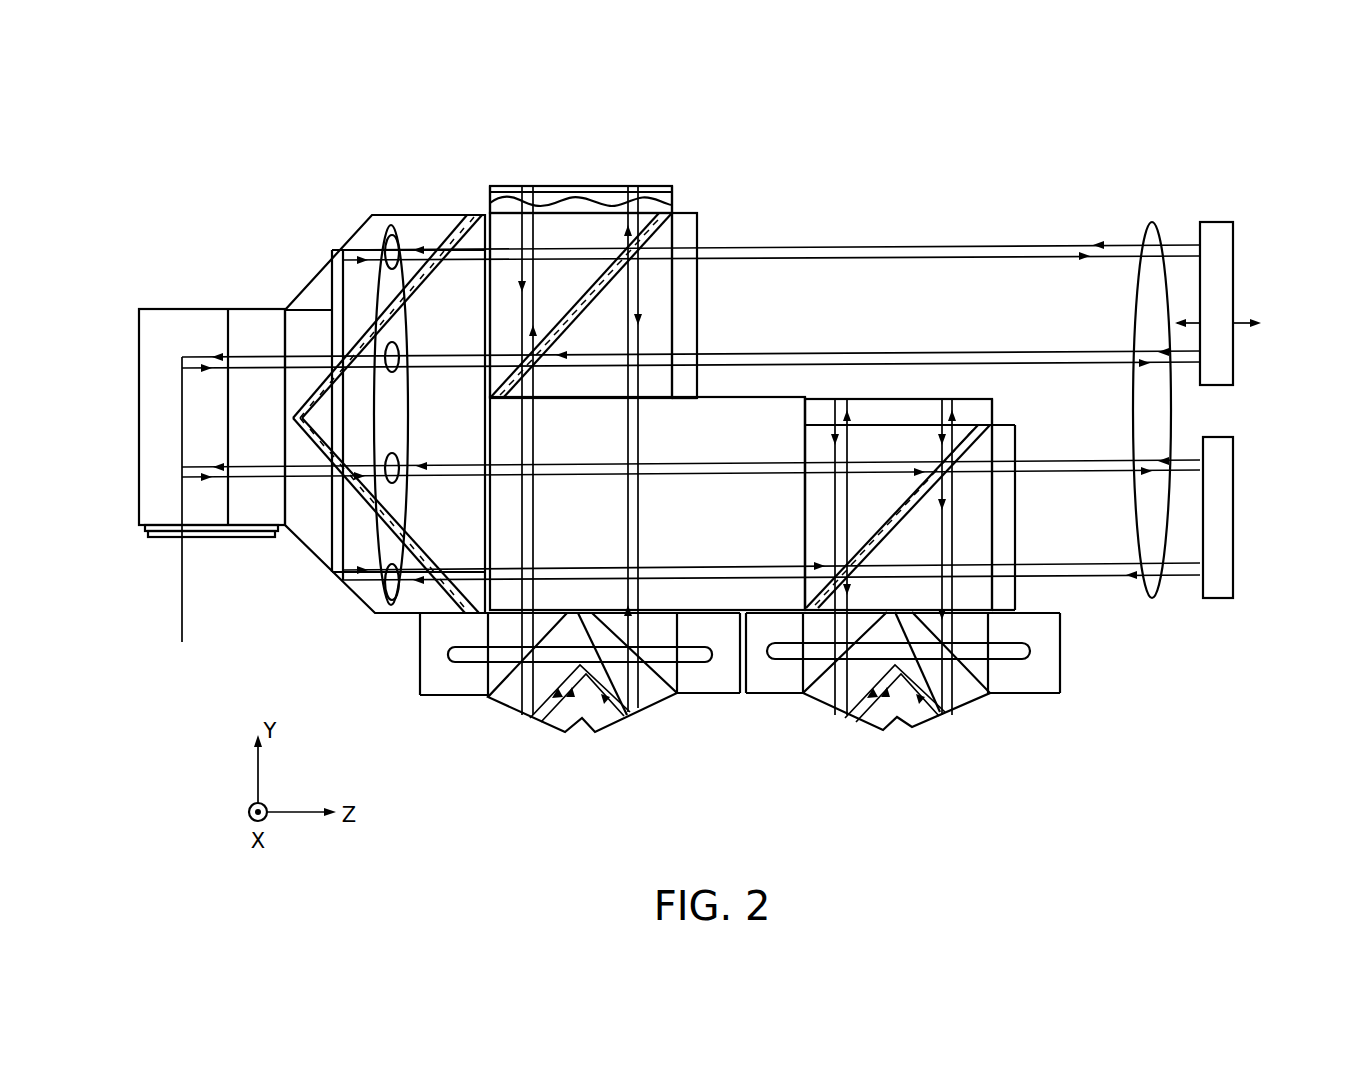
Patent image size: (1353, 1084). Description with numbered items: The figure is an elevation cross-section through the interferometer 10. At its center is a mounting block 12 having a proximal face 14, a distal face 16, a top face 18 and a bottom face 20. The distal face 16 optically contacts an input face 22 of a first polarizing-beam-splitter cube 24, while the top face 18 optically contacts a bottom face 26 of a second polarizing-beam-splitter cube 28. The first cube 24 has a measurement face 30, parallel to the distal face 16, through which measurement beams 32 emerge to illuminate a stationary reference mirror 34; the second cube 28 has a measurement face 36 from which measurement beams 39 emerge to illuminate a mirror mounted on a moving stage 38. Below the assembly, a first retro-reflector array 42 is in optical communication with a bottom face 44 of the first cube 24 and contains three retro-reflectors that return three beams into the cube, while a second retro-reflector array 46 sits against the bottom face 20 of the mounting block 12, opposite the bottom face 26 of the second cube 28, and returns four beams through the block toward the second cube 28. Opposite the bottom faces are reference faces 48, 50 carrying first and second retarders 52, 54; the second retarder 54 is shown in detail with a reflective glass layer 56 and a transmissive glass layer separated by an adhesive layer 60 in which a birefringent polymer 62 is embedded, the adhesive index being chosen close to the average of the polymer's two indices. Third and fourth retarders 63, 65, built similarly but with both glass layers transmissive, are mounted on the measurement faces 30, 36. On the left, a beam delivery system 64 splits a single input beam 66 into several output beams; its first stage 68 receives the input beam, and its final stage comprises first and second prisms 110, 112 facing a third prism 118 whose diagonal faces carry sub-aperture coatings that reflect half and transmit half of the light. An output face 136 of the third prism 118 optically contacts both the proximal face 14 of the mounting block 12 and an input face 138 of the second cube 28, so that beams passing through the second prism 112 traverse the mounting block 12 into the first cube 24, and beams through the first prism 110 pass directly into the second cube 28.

The interferometer 10 is at (776, 116).
The mounting block 12 is at (647, 503).
The proximal face 14 is at (500, 521).
The distal face 16 is at (808, 410).
The top face 18 is at (760, 396).
The bottom face 20 is at (578, 612).
The input face 22 is at (805, 530).
The first polarizing-beam-splitter cube 24 is at (898, 516).
The bottom face 26 is at (660, 397).
The second polarizing-beam-splitter cube 28 is at (581, 305).
The measurement face 30 is at (1006, 449).
The measurement beams 32 is at (1058, 475).
The stationary reference mirror 34 is at (1235, 572).
The measurement face 36 is at (699, 229).
The moving stage 38 is at (1235, 292).
The measurement beams 39 is at (914, 246).
The first retro-reflector array 42 is at (931, 740).
The bottom face 44 is at (975, 626).
The second retro-reflector array 46 is at (616, 740).
The reference face 48 is at (975, 421).
The reference face 50 is at (488, 208).
The first retarder 52 is at (900, 412).
The second retarder 54 is at (686, 193).
The reflective glass layer 56 is at (617, 187).
The adhesive layer 60 is at (557, 197).
The birefringent polymer 62 is at (506, 208).
The third retarder 63 is at (1015, 452).
The beam delivery system 64 is at (287, 186).
The fourth retarder 65 is at (684, 313).
The input beam 66 is at (182, 585).
The first stage 68 is at (190, 309).
The first prism 110 is at (308, 315).
The second prism 112 is at (411, 568).
The third prism 118 is at (414, 336).
The output face 136 is at (482, 486).
The input face 138 is at (482, 298).